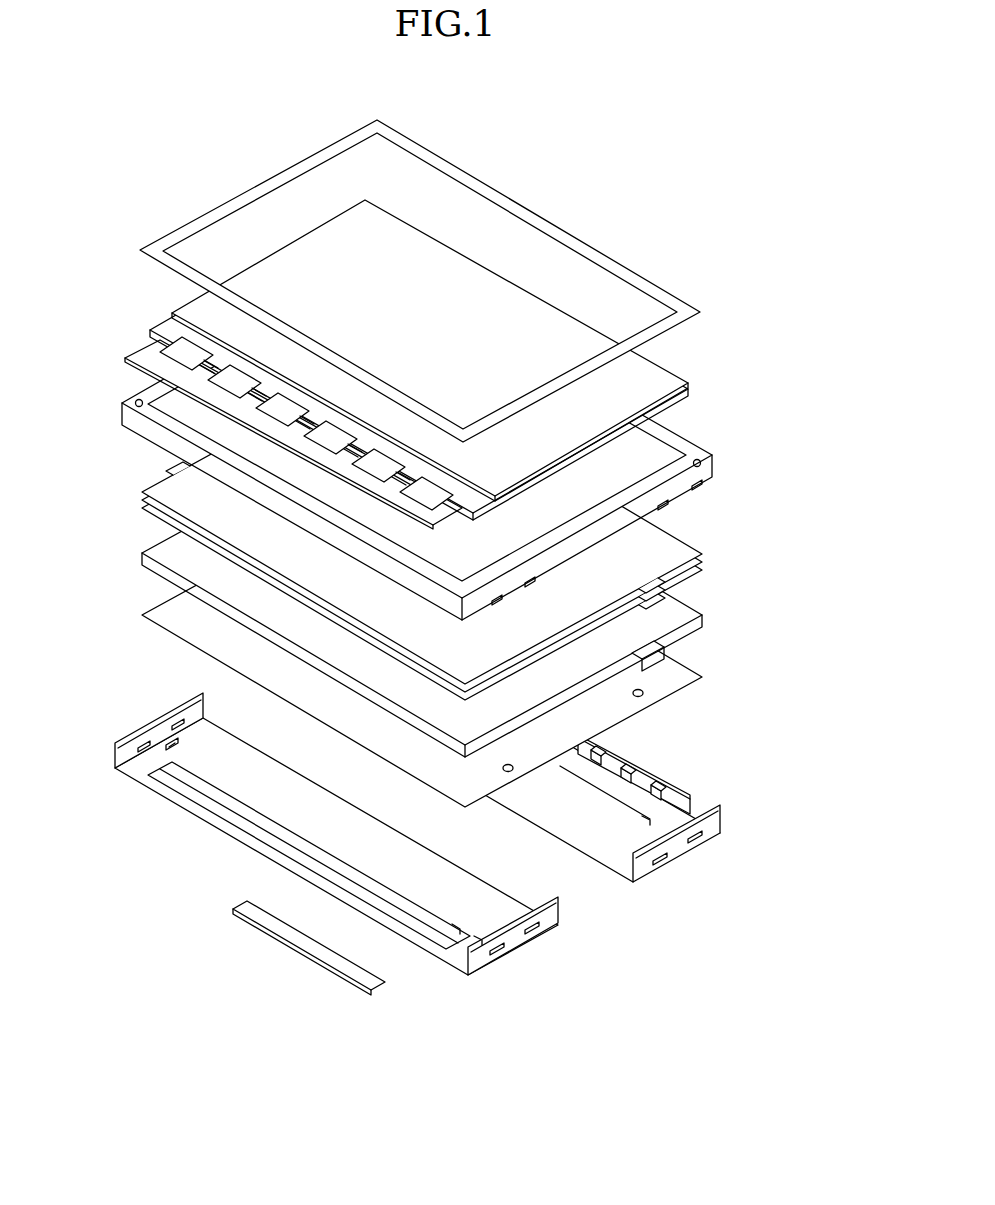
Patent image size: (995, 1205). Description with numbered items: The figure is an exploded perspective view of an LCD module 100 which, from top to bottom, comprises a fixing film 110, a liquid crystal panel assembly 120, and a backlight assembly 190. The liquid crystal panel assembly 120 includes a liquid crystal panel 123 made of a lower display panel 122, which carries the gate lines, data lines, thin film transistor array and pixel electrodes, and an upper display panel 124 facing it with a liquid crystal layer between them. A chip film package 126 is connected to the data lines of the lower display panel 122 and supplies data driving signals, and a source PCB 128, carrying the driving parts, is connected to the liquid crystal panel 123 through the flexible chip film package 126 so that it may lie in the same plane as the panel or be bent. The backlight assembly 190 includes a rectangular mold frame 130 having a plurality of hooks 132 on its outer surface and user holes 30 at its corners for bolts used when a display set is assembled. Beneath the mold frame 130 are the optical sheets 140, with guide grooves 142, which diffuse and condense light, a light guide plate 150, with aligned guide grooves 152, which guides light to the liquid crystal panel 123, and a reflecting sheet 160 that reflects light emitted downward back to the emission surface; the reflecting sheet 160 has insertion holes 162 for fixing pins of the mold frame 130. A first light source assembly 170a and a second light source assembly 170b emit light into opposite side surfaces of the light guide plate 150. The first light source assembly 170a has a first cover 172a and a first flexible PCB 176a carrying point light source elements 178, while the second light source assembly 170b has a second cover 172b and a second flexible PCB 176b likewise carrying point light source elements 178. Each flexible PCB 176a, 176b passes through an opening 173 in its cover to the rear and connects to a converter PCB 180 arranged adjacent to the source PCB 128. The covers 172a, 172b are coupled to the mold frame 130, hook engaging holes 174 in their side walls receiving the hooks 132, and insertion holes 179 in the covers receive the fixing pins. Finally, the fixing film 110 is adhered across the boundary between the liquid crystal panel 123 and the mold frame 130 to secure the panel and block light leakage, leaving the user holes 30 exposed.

The LCD module 100 is at (556, 140).
The fixing film 110 is at (586, 246).
The liquid crystal panel assembly 120 is at (710, 378).
The lower display panel 122 is at (168, 326).
The liquid crystal panel 123 is at (80, 291).
The upper display panel 124 is at (197, 307).
The chip film package 126 is at (165, 354).
The source printed circuit board 128 is at (148, 371).
The mold frame 130 is at (716, 470).
The user holes 30 is at (706, 458).
The hooks 132 is at (704, 485).
The optical sheets 140 is at (703, 546).
The guide grooves 142 is at (692, 542).
The light guide plate 150 is at (690, 623).
The guide grooves 152 is at (652, 610).
The reflecting sheet 160 is at (678, 673).
The insertion holes 162 is at (648, 690).
The first light source assembly 170a is at (684, 874).
The second light source assembly 170b is at (526, 972).
The first cover 172a is at (722, 823).
The second cover 172b is at (492, 964).
The opening 173 is at (460, 924).
The hook engaging holes 174 is at (706, 834).
The first flexible PCB 176a is at (641, 791).
The second flexible PCB 176b is at (292, 836).
The point light source elements 178 is at (604, 749).
The insertion holes 179 is at (172, 740).
The converter PCB 180 is at (300, 942).
The backlight assembly 190 is at (803, 1030).